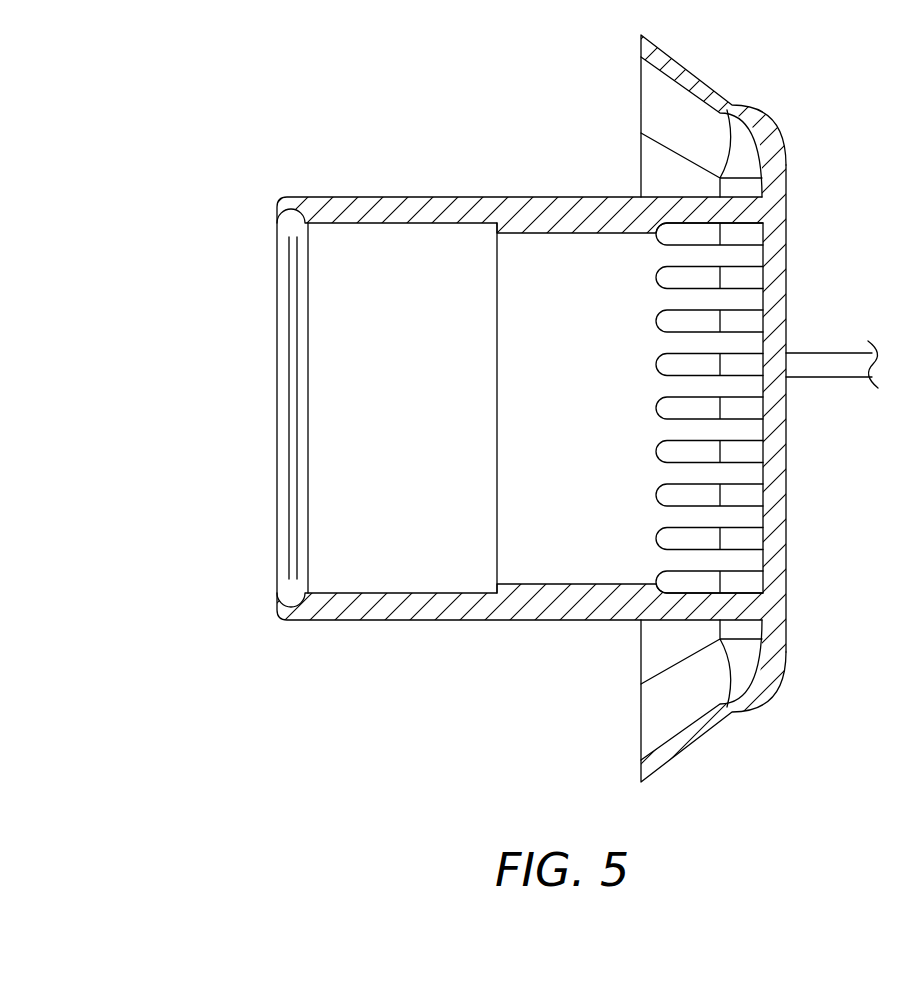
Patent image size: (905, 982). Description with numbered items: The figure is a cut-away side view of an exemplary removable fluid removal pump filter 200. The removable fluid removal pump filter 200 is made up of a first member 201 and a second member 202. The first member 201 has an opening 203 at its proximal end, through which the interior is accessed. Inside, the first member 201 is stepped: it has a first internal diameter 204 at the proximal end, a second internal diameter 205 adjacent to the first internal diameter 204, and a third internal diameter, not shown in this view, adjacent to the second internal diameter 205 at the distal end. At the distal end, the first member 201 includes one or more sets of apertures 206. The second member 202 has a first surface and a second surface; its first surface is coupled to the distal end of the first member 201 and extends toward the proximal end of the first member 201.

The removable fluid removal pump filter 200 is at (158, 184).
The first member 201 is at (292, 612).
The second member 202 is at (735, 703).
The opening 203 is at (337, 414).
The first internal diameter 204 is at (377, 243).
The second internal diameter 205 is at (497, 242).
The sets of apertures 206 is at (748, 539).